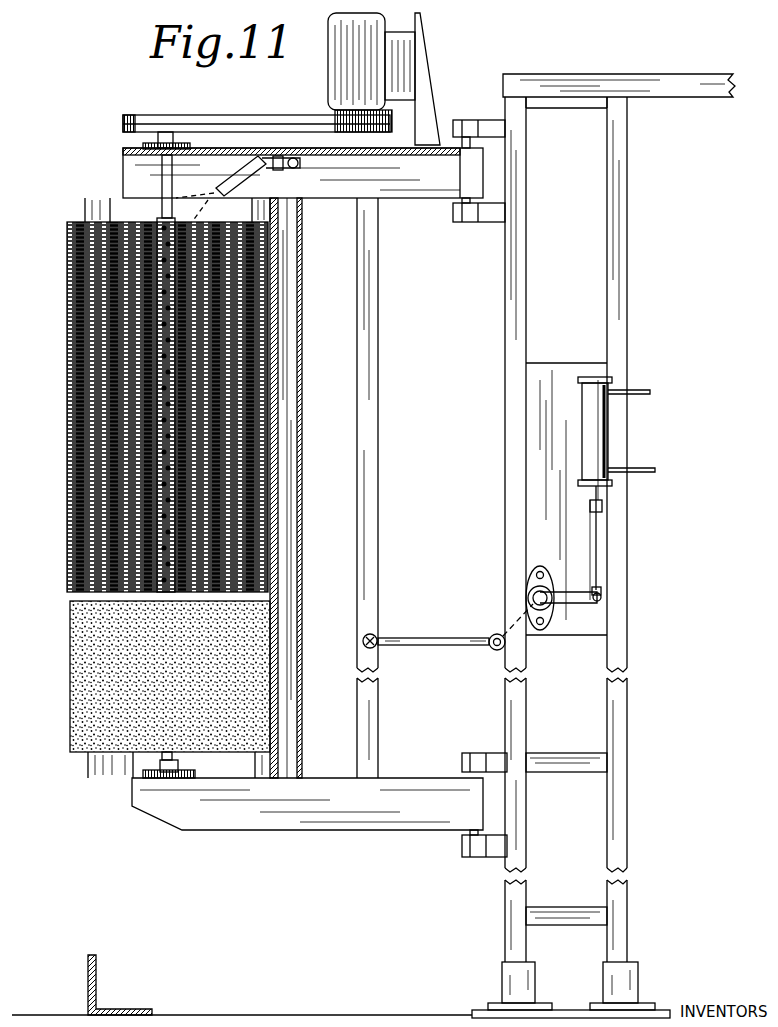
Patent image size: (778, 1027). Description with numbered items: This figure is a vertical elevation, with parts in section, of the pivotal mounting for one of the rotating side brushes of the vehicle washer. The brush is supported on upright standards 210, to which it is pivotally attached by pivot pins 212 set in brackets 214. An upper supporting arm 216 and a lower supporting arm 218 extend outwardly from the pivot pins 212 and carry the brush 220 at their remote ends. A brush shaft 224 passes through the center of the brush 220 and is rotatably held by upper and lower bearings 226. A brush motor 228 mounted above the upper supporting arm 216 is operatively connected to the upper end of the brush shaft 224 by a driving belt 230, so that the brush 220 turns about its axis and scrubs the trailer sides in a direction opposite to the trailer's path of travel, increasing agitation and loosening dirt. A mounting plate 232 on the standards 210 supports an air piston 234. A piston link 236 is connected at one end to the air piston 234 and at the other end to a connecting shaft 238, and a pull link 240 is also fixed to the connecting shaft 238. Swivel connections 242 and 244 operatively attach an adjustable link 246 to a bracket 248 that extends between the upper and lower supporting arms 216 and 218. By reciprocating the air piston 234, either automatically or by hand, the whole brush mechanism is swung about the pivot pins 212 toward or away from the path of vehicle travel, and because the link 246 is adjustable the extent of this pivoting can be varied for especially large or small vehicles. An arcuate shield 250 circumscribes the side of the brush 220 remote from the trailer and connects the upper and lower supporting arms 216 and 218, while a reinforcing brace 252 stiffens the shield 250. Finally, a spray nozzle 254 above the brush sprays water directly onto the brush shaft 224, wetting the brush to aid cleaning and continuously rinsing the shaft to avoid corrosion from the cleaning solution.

The standards 210 is at (608, 268).
The pivot pins 212 is at (468, 130).
The brackets 214 is at (470, 220).
The upper supporting arm 216 is at (162, 190).
The lower supporting arm 218 is at (160, 800).
The brush 220 is at (70, 378).
The brush shaft 224 is at (172, 190).
The bearings 226 is at (158, 139).
The brush motor 228 is at (388, 52).
The driving belt 230 is at (288, 100).
The mounting plate 232 is at (525, 470).
The air piston 234 is at (612, 427).
The piston link 236 is at (600, 603).
The connecting shaft 238 is at (530, 597).
The pull link 240 is at (500, 634).
The swivel connection 242 is at (497, 650).
The swivel connection 244 is at (376, 648).
The adjustable link 246 is at (430, 618).
The bracket 248 is at (368, 451).
The arcuate shield 250 is at (302, 351).
The reinforcing brace 252 is at (278, 328).
The spray nozzle 254 is at (240, 174).